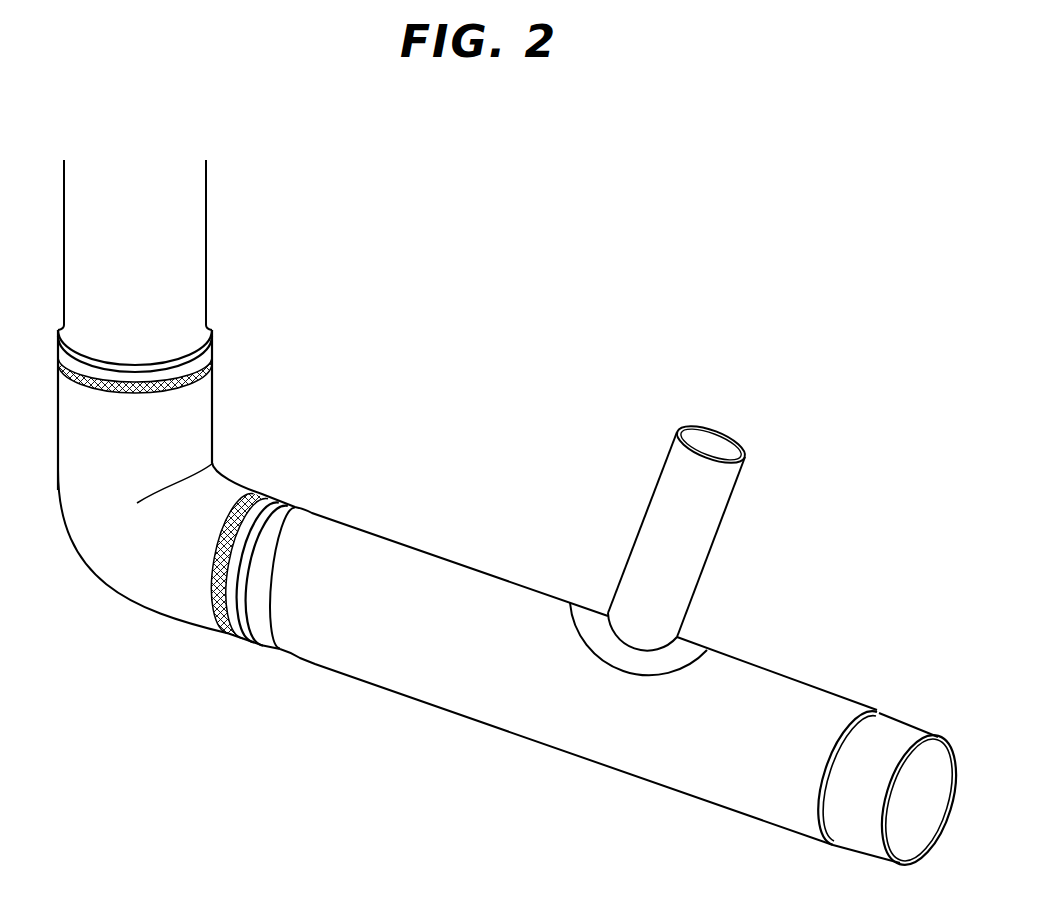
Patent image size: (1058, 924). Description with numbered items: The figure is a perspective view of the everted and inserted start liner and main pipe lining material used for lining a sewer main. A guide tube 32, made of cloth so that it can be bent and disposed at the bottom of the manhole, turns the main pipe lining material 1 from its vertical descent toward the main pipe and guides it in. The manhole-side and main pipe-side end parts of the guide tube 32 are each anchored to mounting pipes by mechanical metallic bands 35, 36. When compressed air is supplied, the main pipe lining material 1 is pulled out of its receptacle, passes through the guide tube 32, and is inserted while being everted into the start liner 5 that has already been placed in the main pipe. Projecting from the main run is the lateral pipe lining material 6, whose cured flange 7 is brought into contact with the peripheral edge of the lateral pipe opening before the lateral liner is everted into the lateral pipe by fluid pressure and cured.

The main pipe lining material 1 is at (207, 238).
The start liner 5 is at (397, 539).
The lateral pipe lining material 6 is at (718, 535).
The flange 7 is at (698, 640).
The guide tube 32 is at (213, 405).
The mechanical metallic band 35 is at (212, 350).
The mechanical metallic band 36 is at (270, 493).